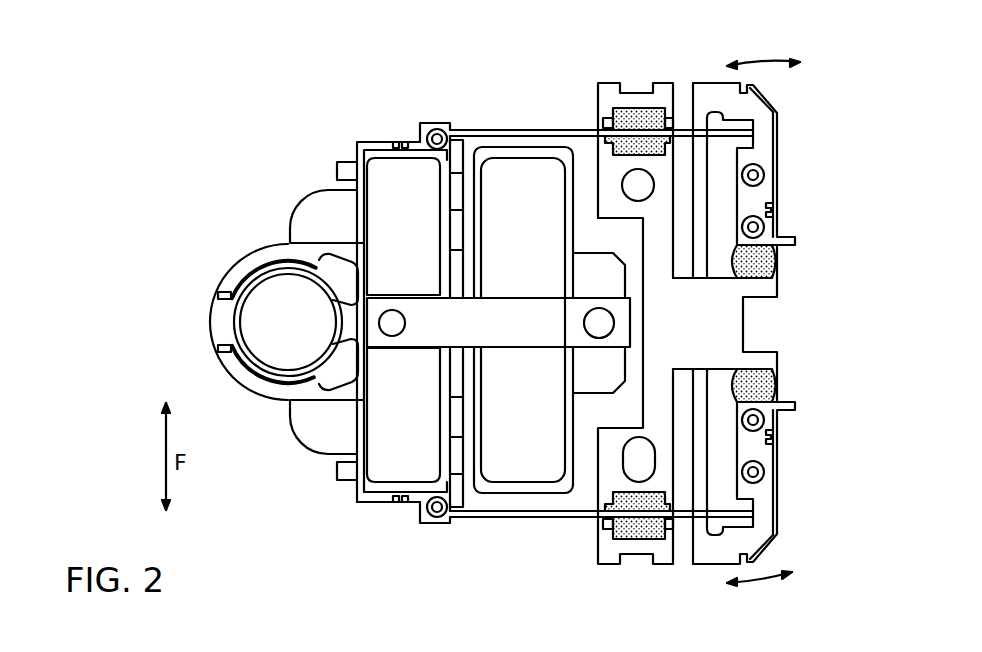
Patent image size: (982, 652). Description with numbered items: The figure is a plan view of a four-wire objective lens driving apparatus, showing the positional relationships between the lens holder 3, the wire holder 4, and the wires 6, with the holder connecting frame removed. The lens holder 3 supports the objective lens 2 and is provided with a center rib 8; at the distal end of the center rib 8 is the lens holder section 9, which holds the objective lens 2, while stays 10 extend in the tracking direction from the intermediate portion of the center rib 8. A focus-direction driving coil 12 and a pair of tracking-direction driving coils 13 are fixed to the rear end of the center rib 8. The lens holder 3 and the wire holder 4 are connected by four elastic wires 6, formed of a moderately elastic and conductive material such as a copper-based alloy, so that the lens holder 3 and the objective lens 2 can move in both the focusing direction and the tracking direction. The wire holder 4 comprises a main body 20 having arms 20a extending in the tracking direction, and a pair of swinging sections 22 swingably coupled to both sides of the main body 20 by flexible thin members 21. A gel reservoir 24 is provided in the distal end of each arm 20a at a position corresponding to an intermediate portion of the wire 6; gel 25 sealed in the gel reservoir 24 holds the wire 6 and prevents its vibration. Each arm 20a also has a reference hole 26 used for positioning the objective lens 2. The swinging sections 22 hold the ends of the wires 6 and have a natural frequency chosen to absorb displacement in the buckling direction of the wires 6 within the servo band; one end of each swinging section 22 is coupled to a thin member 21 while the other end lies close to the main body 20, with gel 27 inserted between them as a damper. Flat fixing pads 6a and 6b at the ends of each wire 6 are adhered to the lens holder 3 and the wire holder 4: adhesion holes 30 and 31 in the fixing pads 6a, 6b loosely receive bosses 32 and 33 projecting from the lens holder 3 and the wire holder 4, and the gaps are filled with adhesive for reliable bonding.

The objective lens 2 is at (267, 322).
The lens holder 3 is at (285, 200).
The wire holder 4 is at (757, 318).
The elastic wire 6 is at (518, 124).
The fixing pad 6a is at (377, 142).
The fixing pad 6b is at (767, 137).
The center rib 8 is at (528, 337).
The lens holder section 9 is at (241, 262).
The stay 10 is at (448, 267).
The focus-direction driving coil 12 is at (508, 490).
The tracking-direction driving coil 13 is at (457, 158).
The main body 20 is at (722, 293).
The arm 20a is at (598, 153).
The flexible thin member 21 is at (697, 177).
The swinging section 22 is at (778, 106).
The gel reservoir 24 is at (643, 110).
The gel 25 is at (623, 110).
The reference hole 26 is at (632, 185).
The gel 27 is at (780, 260).
The adhesion hole 30 is at (437, 128).
The adhesion hole 31 is at (752, 216).
The boss 32 is at (418, 133).
The boss 33 is at (760, 173).